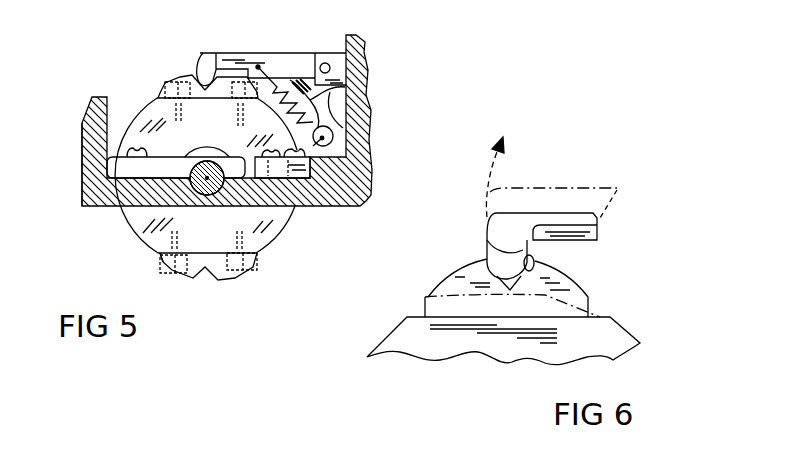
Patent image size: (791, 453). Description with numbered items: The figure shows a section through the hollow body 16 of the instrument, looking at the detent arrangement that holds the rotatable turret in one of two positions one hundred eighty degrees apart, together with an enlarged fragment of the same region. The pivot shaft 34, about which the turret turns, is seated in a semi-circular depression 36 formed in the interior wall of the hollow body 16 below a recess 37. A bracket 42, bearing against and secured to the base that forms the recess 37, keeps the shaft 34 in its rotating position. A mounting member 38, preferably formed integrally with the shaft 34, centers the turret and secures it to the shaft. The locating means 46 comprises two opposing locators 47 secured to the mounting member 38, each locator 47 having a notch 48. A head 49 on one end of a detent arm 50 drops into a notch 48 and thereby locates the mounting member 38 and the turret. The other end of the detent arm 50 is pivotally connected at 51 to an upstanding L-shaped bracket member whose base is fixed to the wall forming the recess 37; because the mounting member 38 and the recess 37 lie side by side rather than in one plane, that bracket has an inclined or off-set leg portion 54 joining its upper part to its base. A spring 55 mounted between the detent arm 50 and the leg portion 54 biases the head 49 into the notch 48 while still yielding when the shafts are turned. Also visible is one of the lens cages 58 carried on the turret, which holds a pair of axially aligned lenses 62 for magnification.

In FIG. 5, the hollow body 16 is at (325, 200).
In FIG. 5, the pivot shaft 34 is at (206, 180).
In FIG. 5, the semi-circular depression 36 is at (159, 251).
In FIG. 5, the recess 37 is at (117, 204).
In FIG. 5, the mounting member 38 is at (267, 233).
In FIG. 6, the mounting member 38 is at (603, 347).
In FIG. 5, the bracket 42 is at (116, 166).
In FIG. 5, the locating means 46 is at (185, 74).
In FIG. 6, the locating means 46 is at (452, 248).
In FIG. 5, the locator 47 is at (158, 96).
In FIG. 6, the locator 47 is at (457, 302).
In FIG. 5, the notch 48 is at (214, 52).
In FIG. 6, the notch 48 is at (535, 260).
In FIG. 5, the head 49 is at (205, 58).
In FIG. 6, the head 49 is at (511, 246).
In FIG. 5, the detent arm 50 is at (275, 53).
In FIG. 6, the detent arm 50 is at (605, 225).
In FIG. 5, the pivotal connection 51 is at (328, 62).
In FIG. 5, the leg portion 54 is at (345, 99).
In FIG. 5, the spring 55 is at (345, 88).
In FIG. 5, the lens cage 58 is at (283, 165).
In FIG. 5, the lens 62 is at (340, 450).